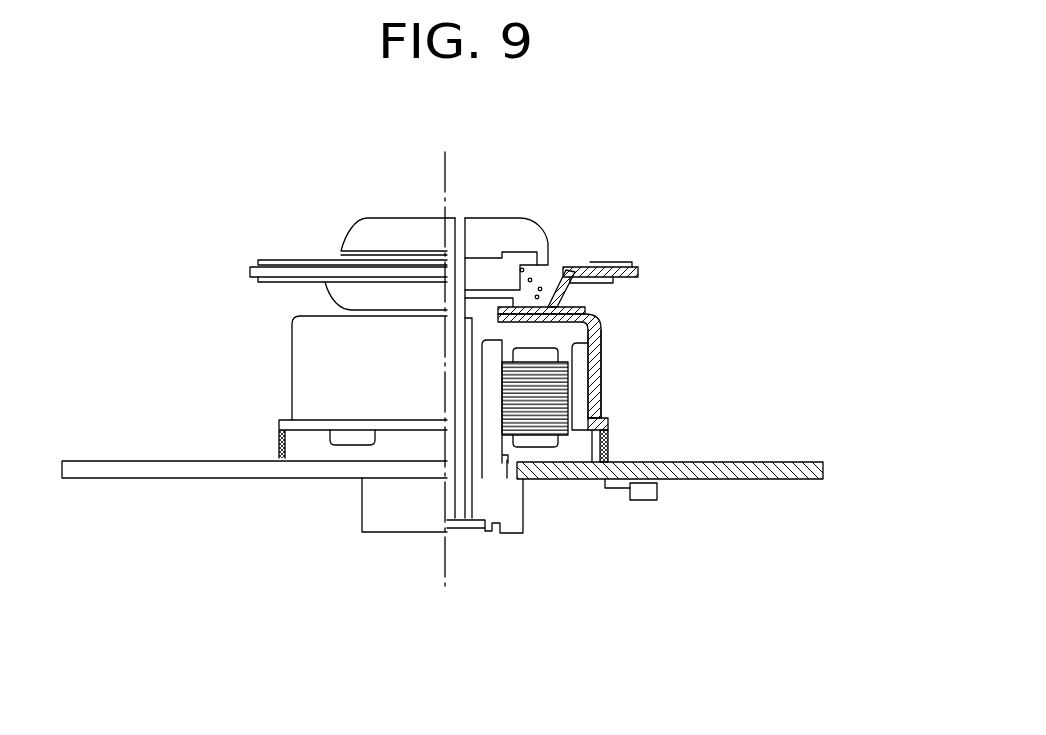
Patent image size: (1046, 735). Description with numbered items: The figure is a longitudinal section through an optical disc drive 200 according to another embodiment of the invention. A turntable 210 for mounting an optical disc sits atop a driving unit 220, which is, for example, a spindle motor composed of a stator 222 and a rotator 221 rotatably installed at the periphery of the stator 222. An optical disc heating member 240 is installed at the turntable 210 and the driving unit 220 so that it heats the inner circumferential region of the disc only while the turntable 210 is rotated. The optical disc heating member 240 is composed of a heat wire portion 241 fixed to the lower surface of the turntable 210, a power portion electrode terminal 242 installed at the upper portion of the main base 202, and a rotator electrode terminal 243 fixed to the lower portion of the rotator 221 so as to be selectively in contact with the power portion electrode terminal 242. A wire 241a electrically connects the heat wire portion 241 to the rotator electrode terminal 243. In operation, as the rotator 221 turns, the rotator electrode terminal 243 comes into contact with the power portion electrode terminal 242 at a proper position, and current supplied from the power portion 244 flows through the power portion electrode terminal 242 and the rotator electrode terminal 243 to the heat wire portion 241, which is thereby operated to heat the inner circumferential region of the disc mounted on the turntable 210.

The optical disc drive 200 is at (533, 192).
The main base 202 is at (823, 472).
The turntable 210 is at (578, 266).
The driving unit 220 is at (552, 461).
The rotator 221 is at (582, 417).
The stator 222 is at (533, 420).
The optical disc heating member 240 is at (646, 394).
The heat wire portion 241 is at (613, 280).
The wire 241a is at (603, 367).
The power portion electrode terminal 242 is at (655, 446).
The rotator electrode terminal 243 is at (608, 433).
The power portion 244 is at (657, 490).